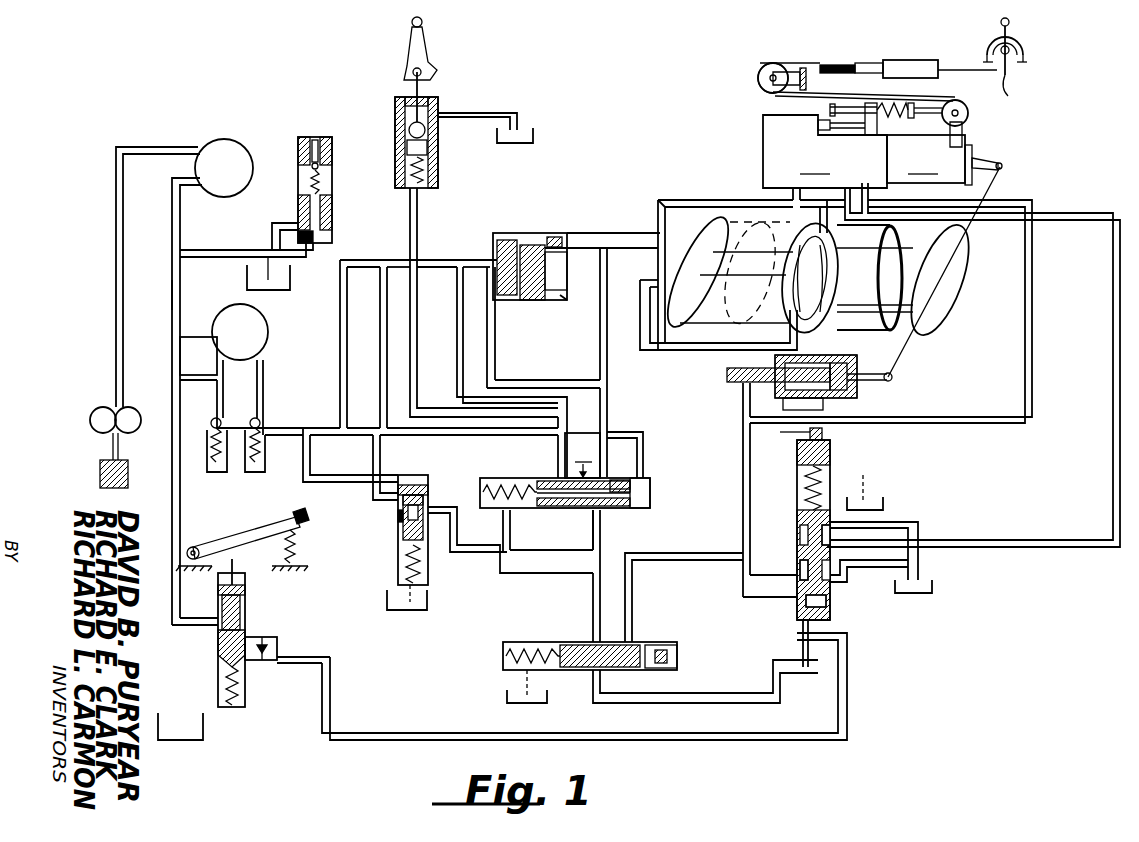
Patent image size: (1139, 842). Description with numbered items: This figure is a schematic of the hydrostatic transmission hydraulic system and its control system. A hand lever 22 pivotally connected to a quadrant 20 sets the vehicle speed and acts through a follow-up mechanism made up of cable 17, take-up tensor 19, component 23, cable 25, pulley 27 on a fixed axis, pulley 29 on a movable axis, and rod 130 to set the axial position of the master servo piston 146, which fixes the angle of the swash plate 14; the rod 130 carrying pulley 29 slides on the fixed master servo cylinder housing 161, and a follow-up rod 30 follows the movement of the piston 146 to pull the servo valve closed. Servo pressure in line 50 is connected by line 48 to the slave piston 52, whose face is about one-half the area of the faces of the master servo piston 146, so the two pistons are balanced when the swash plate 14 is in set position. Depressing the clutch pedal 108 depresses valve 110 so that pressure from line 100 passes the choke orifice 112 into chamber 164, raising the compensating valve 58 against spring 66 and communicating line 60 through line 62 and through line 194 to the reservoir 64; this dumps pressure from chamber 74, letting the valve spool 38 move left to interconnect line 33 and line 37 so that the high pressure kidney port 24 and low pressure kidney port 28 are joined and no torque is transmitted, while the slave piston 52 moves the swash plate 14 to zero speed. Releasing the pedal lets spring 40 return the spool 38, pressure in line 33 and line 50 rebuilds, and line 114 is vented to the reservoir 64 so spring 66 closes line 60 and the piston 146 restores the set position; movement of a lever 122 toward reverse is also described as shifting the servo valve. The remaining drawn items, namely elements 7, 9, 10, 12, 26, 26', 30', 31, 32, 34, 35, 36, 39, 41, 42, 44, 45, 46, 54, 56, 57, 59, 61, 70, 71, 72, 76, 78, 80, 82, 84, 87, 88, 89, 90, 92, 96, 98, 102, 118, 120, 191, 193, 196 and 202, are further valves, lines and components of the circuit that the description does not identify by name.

The passage 7 is at (540, 512).
The passage 9 is at (607, 514).
The clutch drum 10 is at (850, 335).
The input plate 12 is at (707, 242).
The swash plate 14 is at (952, 298).
The cable 17 is at (1017, 92).
The take-up tensor 19 is at (910, 62).
The quadrant 20 is at (1027, 58).
The hand lever 22 is at (1010, 24).
The follow-up mechanism component 23 is at (835, 64).
The high pressure kidney port 24 is at (830, 258).
The cable 25 is at (795, 72).
The clutch assembly 26 is at (656, 188).
The check valve 26' is at (602, 229).
The pulley 27 is at (760, 72).
The low pressure kidney port 28 is at (810, 278).
The pulley 29 is at (970, 115).
The follow-up rod 30 is at (733, 286).
The clutch line branch 30' is at (582, 312).
The pressure line 31 is at (350, 455).
The clutch control valve 32 is at (520, 230).
The line 33 is at (490, 342).
The main pressure line 34 is at (470, 262).
The branch line 35 is at (381, 468).
The modulating valve 36 is at (565, 470).
The line 37 is at (562, 424).
The valve spool 38 is at (578, 512).
The conduit 39 is at (614, 434).
The spring 40 is at (513, 484).
The conduit 41 is at (487, 548).
The valve port 42 is at (540, 275).
The check valve 44 is at (645, 645).
The relief valve spring 45 is at (567, 642).
The conduit 46 is at (630, 596).
The line 48 is at (743, 418).
The line 50 is at (925, 418).
The slave piston 52 is at (852, 392).
The valve land 54 is at (797, 451).
The check valve 56 is at (823, 434).
The valve land 57 is at (828, 598).
The compensating valve 58 is at (797, 518).
The valve port 59 is at (826, 512).
The line 60 is at (1112, 432).
The valve port 61 is at (797, 553).
The line 62 is at (914, 521).
The reservoir 64 is at (292, 278).
The spring 66 is at (797, 482).
The selector valve 70 is at (440, 148).
The exhaust line 71 is at (470, 112).
The conduit 72 is at (412, 332).
The chamber 74 is at (500, 515).
The pump 76 is at (100, 418).
The reservoir 78 is at (198, 356).
The pump 80 is at (268, 333).
The relief valve 82 is at (212, 420).
The relief valve 84 is at (259, 420).
The valve land 87 is at (428, 495).
The regulator valve 88 is at (398, 541).
The valve cap 89 is at (412, 483).
The valve port 90 is at (398, 516).
The valve spring 92 is at (426, 568).
The pump 96 is at (230, 146).
The suction line 98 is at (114, 258).
The line 100 is at (181, 490).
The brake valve 102 is at (247, 592).
The clutch pedal 108 is at (226, 546).
The valve 110 is at (220, 648).
The choke orifice 112 is at (278, 640).
The line 114 is at (350, 729).
The line 118 is at (181, 294).
The line 120 is at (196, 252).
The lever 122 is at (333, 200).
The rod 130 is at (934, 106).
The master servo piston 146 is at (944, 160).
The master servo cylinder housing 161 is at (825, 151).
The chamber 164 is at (797, 626).
The conduit 191 is at (800, 646).
The conduit 193 is at (752, 580).
The line 194 is at (849, 568).
The valve end plug 196 is at (642, 490).
The line 202 is at (277, 222).